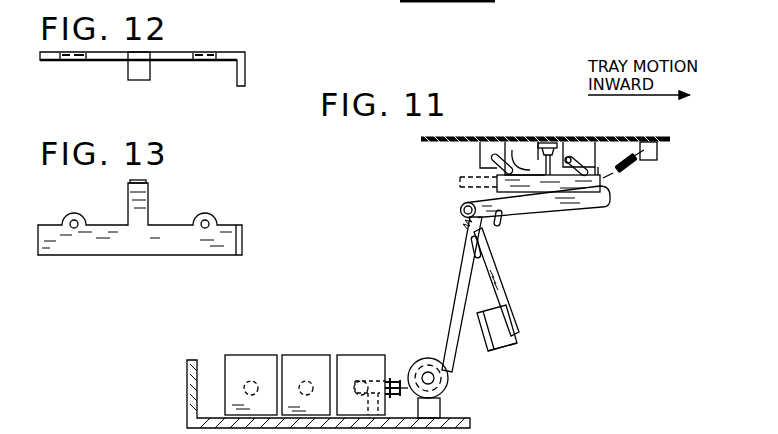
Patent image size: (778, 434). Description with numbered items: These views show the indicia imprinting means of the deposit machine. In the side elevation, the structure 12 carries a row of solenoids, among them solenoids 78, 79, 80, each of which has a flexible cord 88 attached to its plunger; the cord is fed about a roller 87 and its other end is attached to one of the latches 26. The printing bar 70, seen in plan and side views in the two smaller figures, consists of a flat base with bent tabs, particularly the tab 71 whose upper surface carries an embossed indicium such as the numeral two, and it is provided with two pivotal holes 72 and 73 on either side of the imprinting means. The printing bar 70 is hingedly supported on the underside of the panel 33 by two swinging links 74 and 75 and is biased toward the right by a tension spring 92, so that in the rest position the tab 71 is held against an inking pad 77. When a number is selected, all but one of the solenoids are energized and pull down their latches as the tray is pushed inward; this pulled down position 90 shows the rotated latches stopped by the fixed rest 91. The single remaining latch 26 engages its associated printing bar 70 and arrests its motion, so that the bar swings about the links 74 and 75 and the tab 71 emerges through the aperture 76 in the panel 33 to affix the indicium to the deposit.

In FIG. 11, the structure 12 is at (478, 2).
In FIG. 11, the latch 26 is at (596, 203).
In FIG. 11, the panel 33 is at (637, 130).
In FIG. 12, the printing bar 70 is at (245, 62).
In FIG. 13, the printing bar 70 is at (178, 250).
In FIG. 11, the printing bar 70 is at (560, 185).
In FIG. 12, the tab 71 is at (140, 72).
In FIG. 13, the tab 71 is at (146, 180).
In FIG. 13, the pivotal hole 72 is at (208, 214).
In FIG. 13, the pivotal hole 73 is at (78, 214).
In FIG. 11, the swinging link 74 is at (592, 143).
In FIG. 11, the swinging link 75 is at (491, 137).
In FIG. 11, the aperture 76 is at (527, 145).
In FIG. 11, the inking pad 77 is at (553, 142).
In FIG. 11, the solenoid 78 is at (372, 373).
In FIG. 11, the solenoid 79 is at (317, 373).
In FIG. 11, the solenoid 80 is at (262, 373).
In FIG. 11, the roller 87 is at (426, 357).
In FIG. 11, the flexible cord 88 is at (458, 305).
In FIG. 11, the pulled down position 90 is at (525, 338).
In FIG. 11, the fixed rest 91 is at (492, 352).
In FIG. 11, the tension spring 92 is at (620, 176).